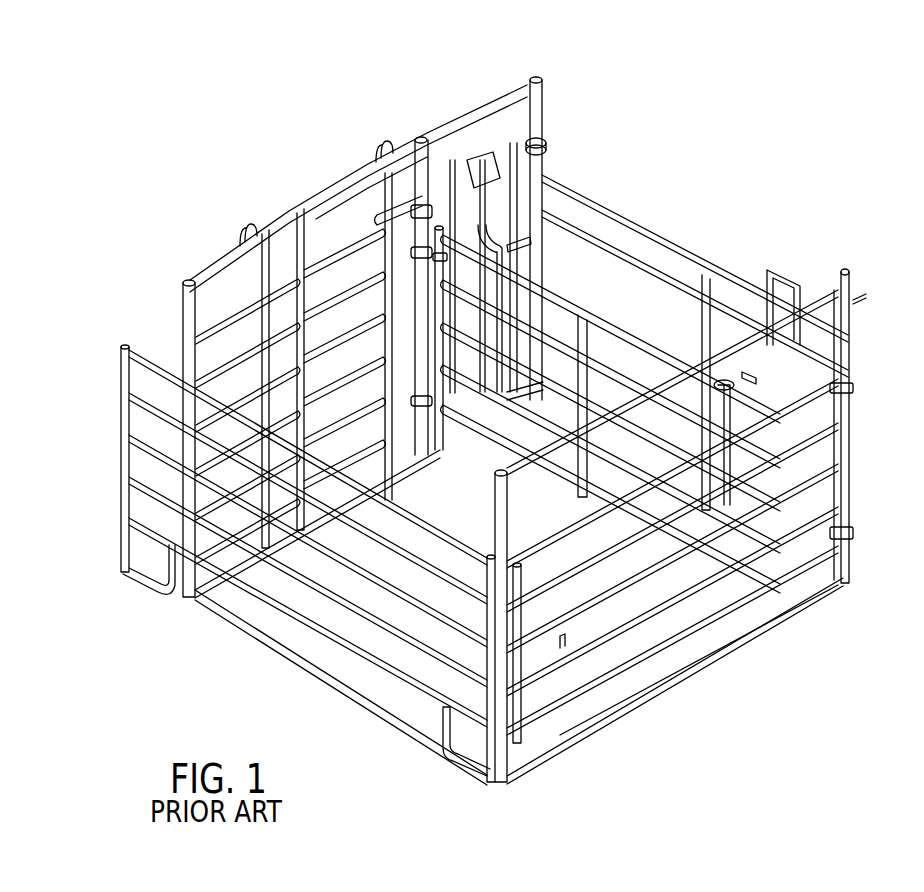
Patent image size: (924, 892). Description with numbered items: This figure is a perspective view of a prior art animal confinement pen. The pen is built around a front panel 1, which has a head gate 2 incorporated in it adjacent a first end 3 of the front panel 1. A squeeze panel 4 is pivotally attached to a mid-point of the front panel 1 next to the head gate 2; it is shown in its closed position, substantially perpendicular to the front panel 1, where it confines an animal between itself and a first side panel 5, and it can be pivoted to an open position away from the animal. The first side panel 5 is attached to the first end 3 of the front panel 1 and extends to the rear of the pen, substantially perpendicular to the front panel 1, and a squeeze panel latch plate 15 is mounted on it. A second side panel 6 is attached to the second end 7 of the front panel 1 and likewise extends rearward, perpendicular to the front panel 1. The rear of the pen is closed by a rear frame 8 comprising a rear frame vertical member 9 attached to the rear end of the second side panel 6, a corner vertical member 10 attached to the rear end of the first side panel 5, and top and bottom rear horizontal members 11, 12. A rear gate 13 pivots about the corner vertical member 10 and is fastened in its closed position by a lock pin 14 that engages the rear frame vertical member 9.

The front panel 1 is at (300, 206).
The head gate 2 is at (478, 222).
The first end 3 is at (530, 80).
The squeeze panel 4 is at (605, 330).
The first side panel 5 is at (611, 210).
The second side panel 6 is at (346, 656).
The second end 7 is at (186, 280).
The rear frame 8 is at (515, 783).
The rear frame vertical member 9 is at (494, 783).
The corner vertical member 10 is at (848, 350).
The top rear horizontal member 11 is at (833, 283).
The bottom rear horizontal member 12 is at (805, 601).
The rear gate 13 is at (686, 594).
The lock pin 14 is at (566, 642).
The squeeze panel latch plate 15 is at (772, 266).